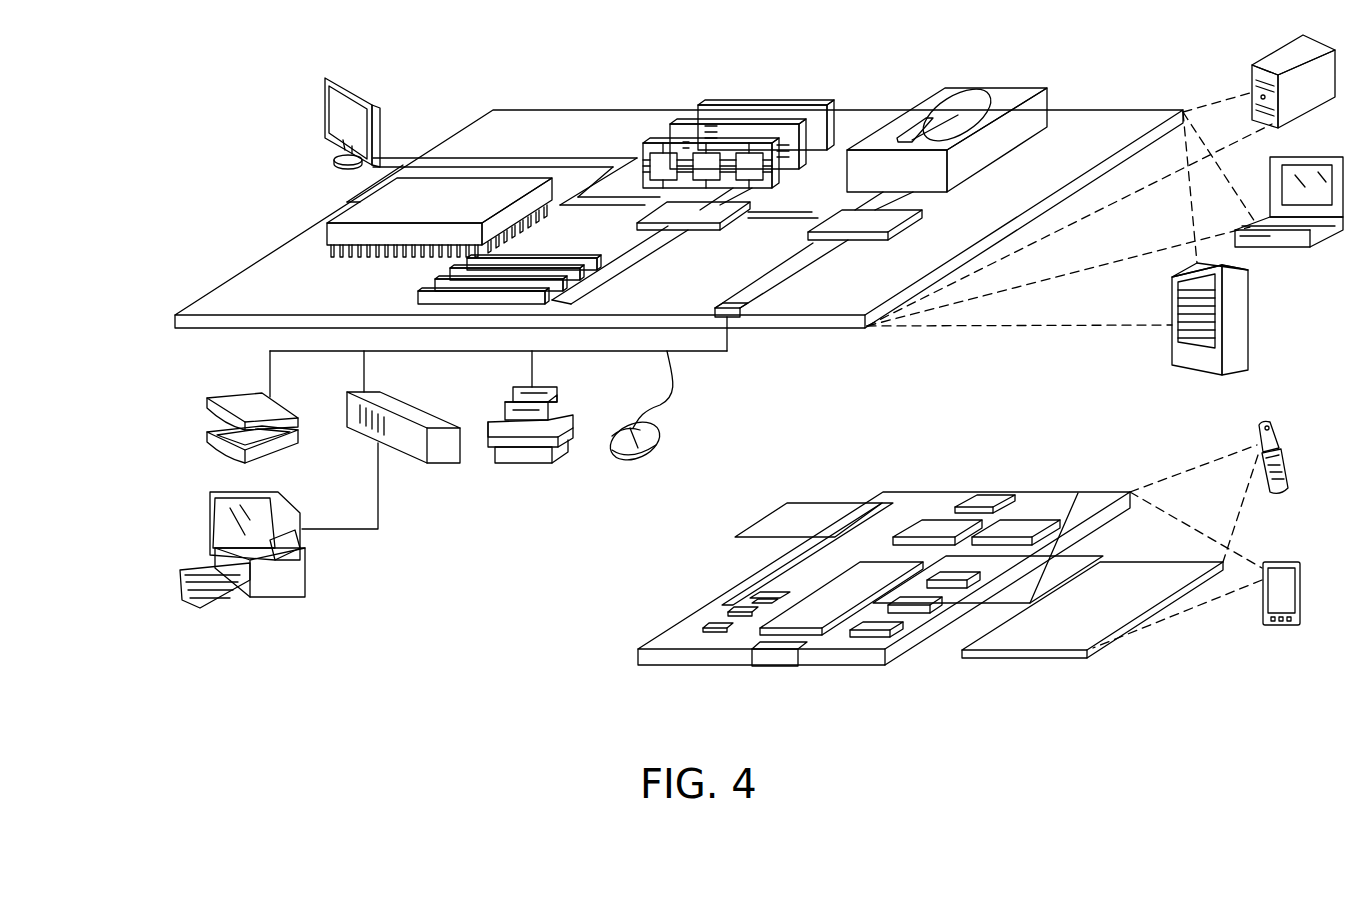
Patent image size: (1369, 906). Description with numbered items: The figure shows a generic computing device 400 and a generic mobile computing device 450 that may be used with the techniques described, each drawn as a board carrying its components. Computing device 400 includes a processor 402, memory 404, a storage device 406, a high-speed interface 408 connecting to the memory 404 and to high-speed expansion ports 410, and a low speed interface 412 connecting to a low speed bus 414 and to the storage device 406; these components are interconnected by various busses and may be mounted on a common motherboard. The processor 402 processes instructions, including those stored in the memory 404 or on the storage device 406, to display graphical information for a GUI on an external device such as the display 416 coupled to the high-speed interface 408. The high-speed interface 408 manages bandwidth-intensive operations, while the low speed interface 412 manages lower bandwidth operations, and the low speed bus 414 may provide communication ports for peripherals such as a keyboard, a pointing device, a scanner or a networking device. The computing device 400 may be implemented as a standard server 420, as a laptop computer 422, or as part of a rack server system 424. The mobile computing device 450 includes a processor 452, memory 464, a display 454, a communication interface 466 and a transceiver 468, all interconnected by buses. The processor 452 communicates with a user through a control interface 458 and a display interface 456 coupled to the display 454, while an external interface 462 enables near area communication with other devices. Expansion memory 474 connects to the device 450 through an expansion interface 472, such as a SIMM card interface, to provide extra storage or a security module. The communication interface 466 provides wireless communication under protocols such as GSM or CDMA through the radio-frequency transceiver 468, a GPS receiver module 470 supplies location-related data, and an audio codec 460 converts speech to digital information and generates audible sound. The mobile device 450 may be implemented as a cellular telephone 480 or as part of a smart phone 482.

The computing device 400 is at (448, 58).
The processor 402 is at (347, 202).
The memory 404 is at (770, 103).
The storage device 406 is at (987, 88).
The high-speed interface 408 is at (705, 213).
The high-speed expansion ports 410 is at (442, 275).
The low speed interface 412 is at (840, 217).
The low speed bus 414 is at (733, 302).
The display 416 is at (327, 78).
The standard server 420 is at (1272, 62).
The laptop computer 422 is at (1322, 157).
The rack server system 424 is at (1249, 320).
The mobile computer device 450 is at (590, 678).
The processor 452 is at (813, 603).
The display 454 is at (1132, 572).
The display interface 456 is at (883, 625).
The control interface 458 is at (922, 602).
The audio codec 460 is at (960, 573).
The external interface 462 is at (775, 653).
The memory 464 is at (732, 612).
The communication interface 466 is at (935, 522).
The transceiver 468 is at (1025, 525).
The GPS receiver module 470 is at (985, 502).
The expansion interface 472 is at (867, 503).
The expansion memory 474 is at (788, 502).
The cellular telephone 480 is at (1265, 420).
The smart phone 482 is at (1277, 562).